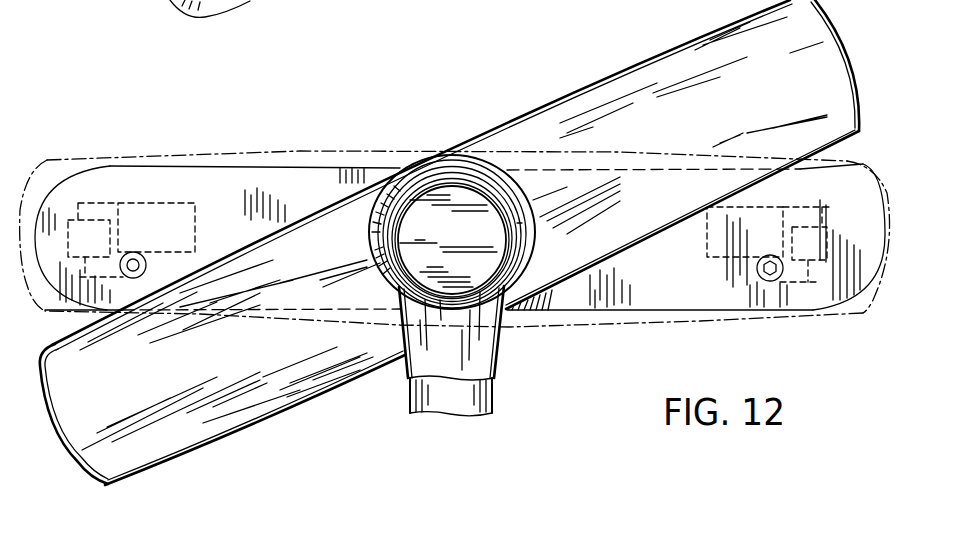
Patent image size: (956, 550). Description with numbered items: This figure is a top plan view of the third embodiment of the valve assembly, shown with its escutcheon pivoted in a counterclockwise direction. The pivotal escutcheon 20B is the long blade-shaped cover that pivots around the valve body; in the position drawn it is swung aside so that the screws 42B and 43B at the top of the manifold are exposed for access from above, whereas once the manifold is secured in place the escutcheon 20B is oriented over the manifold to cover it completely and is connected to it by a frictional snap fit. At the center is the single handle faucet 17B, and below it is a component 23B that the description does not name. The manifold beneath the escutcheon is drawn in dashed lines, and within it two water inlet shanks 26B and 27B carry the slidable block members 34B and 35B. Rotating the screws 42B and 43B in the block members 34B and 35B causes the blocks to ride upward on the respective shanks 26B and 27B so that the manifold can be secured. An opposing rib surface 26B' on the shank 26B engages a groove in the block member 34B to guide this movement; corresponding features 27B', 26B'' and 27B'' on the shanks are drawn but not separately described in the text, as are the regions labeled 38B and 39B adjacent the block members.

The pivotal escutcheon 20B is at (647, 77).
The single handle faucet 17B is at (447, 197).
The stem / shaft 23B is at (494, 403).
The water inlet shank 26B is at (72, 276).
The water inlet shank 27B is at (849, 258).
The opposing rib surface 26B' is at (93, 193).
The right plate engaging portion 27B' is at (843, 198).
The left plate lower portion 26B'' is at (130, 312).
The right plate lower portion 27B'' is at (815, 315).
The block member 34B is at (113, 203).
The block member 35B is at (740, 192).
The left recess 38B is at (193, 203).
The right recess 39B is at (717, 252).
The screw 42B is at (180, 249).
The screw 43B is at (773, 282).